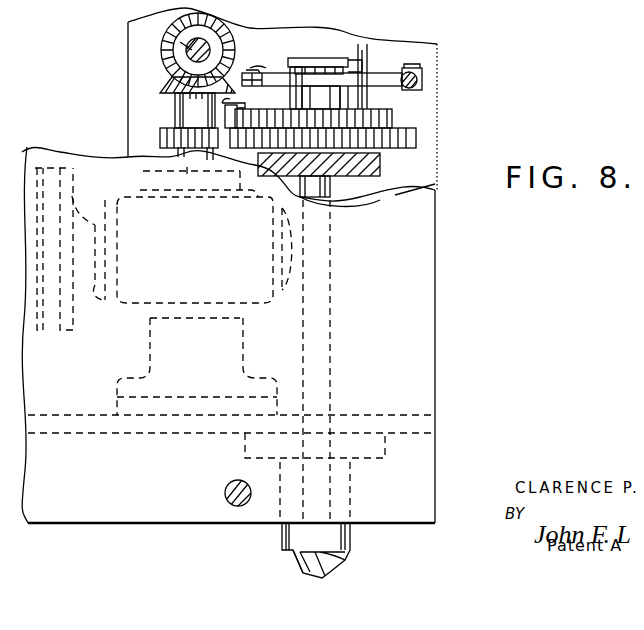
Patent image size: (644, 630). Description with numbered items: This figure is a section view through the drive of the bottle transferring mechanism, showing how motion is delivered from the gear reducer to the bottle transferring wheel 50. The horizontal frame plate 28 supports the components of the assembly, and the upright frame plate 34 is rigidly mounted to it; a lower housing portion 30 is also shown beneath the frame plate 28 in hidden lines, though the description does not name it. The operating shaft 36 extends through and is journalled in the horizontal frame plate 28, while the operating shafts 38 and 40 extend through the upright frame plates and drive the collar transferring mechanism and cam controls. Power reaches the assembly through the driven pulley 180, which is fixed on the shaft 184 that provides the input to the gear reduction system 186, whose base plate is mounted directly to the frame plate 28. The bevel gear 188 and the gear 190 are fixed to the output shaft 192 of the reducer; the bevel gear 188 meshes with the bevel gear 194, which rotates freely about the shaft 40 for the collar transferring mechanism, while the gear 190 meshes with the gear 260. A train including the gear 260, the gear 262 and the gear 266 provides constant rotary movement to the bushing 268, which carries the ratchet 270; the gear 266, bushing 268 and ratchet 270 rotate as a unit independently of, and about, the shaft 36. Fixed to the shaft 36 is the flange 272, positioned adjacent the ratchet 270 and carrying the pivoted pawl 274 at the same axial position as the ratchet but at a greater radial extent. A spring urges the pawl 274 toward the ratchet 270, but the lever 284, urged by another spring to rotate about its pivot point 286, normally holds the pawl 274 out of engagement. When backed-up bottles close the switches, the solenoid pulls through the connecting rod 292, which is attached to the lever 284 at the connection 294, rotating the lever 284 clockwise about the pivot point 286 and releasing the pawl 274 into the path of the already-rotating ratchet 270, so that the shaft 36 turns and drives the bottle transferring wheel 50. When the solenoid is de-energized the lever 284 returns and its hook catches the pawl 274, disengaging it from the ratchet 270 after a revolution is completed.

The horizontal frame plate 28 is at (85, 435).
The lower housing block 30 is at (243, 447).
The upright frame plate 34 is at (151, 70).
The operating shaft 36 is at (332, 190).
The operating shaft 38 is at (225, 494).
The operating shaft 40 is at (185, 40).
The bottle transferring wheel 50 is at (348, 540).
The driven pulley 180 is at (62, 178).
The shaft 184 is at (104, 224).
The gear reduction system 186 is at (138, 304).
The bevel gear 188 is at (175, 100).
The gear 190 is at (160, 140).
The output shaft 192 is at (128, 171).
The bevel gear 194 is at (186, 14).
The gear 260 is at (244, 112).
The gear 262 is at (416, 140).
The gear 266 is at (392, 118).
The bushing 268 is at (390, 104).
The ratchet 270 is at (366, 96).
The flange 272 is at (296, 66).
The pawl 274 is at (288, 72).
The lever 284 is at (399, 50).
The pivot point 286 is at (370, 72).
The connecting rod 292 is at (420, 82).
The connection point 294 is at (420, 70).